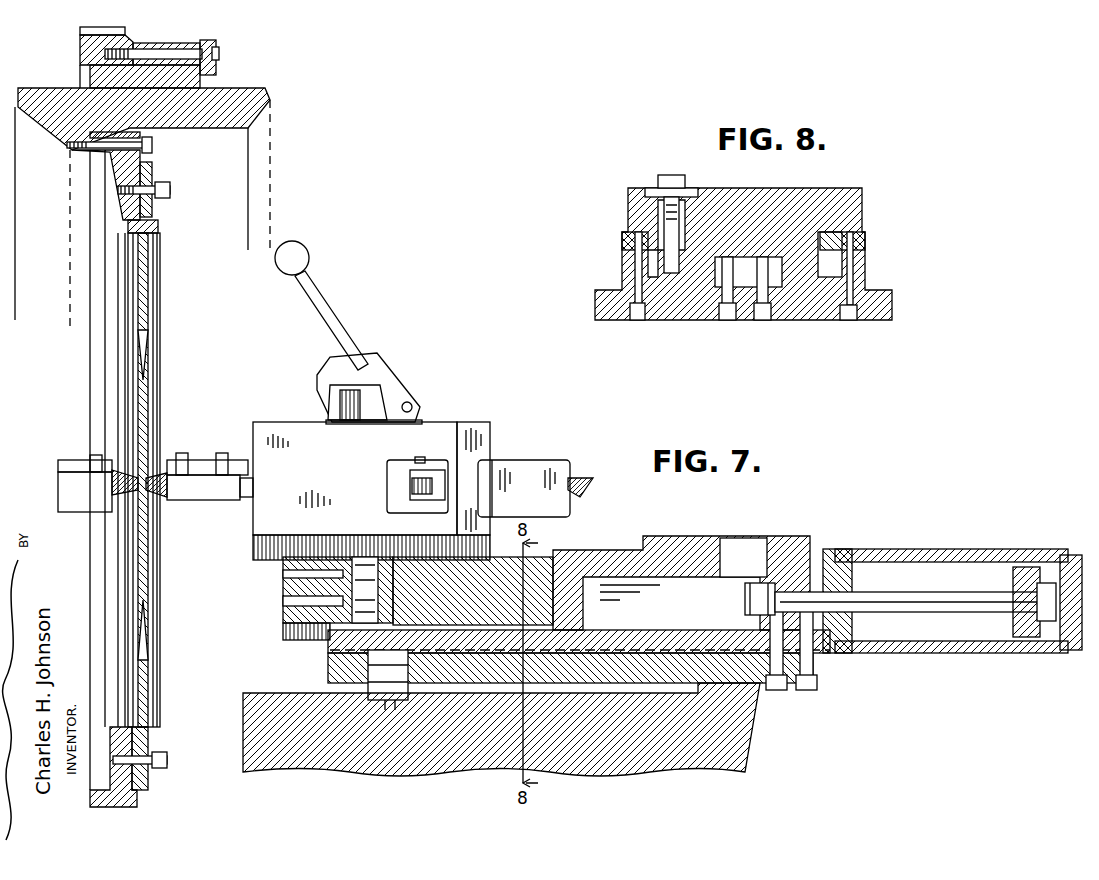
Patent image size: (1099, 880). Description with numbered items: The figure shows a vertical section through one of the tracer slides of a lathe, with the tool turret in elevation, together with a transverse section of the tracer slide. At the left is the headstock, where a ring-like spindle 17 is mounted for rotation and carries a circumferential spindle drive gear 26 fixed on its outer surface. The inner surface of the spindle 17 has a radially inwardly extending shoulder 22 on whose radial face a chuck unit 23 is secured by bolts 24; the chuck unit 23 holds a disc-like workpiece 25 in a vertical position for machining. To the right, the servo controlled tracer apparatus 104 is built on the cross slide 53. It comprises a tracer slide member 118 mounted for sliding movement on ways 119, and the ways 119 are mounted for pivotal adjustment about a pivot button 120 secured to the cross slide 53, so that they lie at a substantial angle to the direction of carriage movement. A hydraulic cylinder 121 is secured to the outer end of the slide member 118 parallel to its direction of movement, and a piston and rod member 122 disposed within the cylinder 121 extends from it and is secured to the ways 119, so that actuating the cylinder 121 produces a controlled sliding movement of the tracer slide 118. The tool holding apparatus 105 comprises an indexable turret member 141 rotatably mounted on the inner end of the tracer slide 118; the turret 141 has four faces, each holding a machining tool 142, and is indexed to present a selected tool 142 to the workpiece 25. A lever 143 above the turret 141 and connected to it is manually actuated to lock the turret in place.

In FIG. 7, the spindle 17 is at (270, 113).
In FIG. 7, the spindle drive gear 26 is at (80, 38).
In FIG. 7, the shoulder 22 is at (82, 158).
In FIG. 7, the chuck unit 23 is at (113, 183).
In FIG. 7, the bolts 24 is at (152, 148).
In FIG. 7, the workpiece 25 is at (150, 255).
In FIG. 7, the cross slide 53 is at (752, 716).
In FIG. 7, the servo controlled tracer apparatus 104 is at (828, 521).
In FIG. 7, the tool holding apparatus 105 is at (487, 403).
In FIG. 7, the tracer slide member 118 is at (283, 590).
In FIG. 8, the tracer slide member 118 is at (868, 198).
In FIG. 7, the ways 119 is at (818, 670).
In FIG. 8, the ways 119 is at (622, 238).
In FIG. 7, the pivot button 120 is at (365, 687).
In FIG. 7, the hydraulic cylinder 121 is at (940, 548).
In FIG. 7, the piston and rod member 122 is at (970, 610).
In FIG. 7, the indexable turret member 141 is at (290, 425).
In FIG. 7, the machining tool 142 is at (125, 472).
In FIG. 7, the lever 143 is at (326, 305).